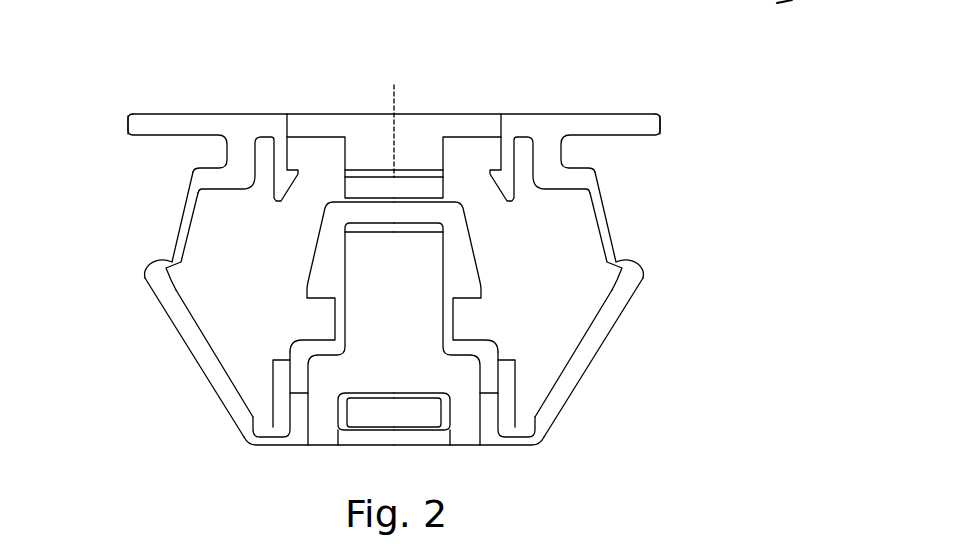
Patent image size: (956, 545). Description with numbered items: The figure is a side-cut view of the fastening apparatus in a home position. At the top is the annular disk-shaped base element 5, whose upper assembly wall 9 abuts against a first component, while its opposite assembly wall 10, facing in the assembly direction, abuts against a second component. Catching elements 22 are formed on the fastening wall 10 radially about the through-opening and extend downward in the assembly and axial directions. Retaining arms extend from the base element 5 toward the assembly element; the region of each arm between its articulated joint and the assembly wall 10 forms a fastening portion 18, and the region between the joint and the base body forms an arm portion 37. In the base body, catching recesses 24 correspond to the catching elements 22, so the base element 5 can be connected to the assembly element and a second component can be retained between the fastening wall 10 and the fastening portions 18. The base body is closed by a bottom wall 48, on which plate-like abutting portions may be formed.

The base element 5 is at (643, 126).
The assembly wall 9 is at (554, 104).
The assembly wall 10 is at (141, 145).
The fastening portion 18 is at (182, 238).
The catching element 22 is at (282, 186).
The catching recess 24 is at (300, 403).
The arm portion 37 is at (197, 353).
The bottom wall 48 is at (510, 435).